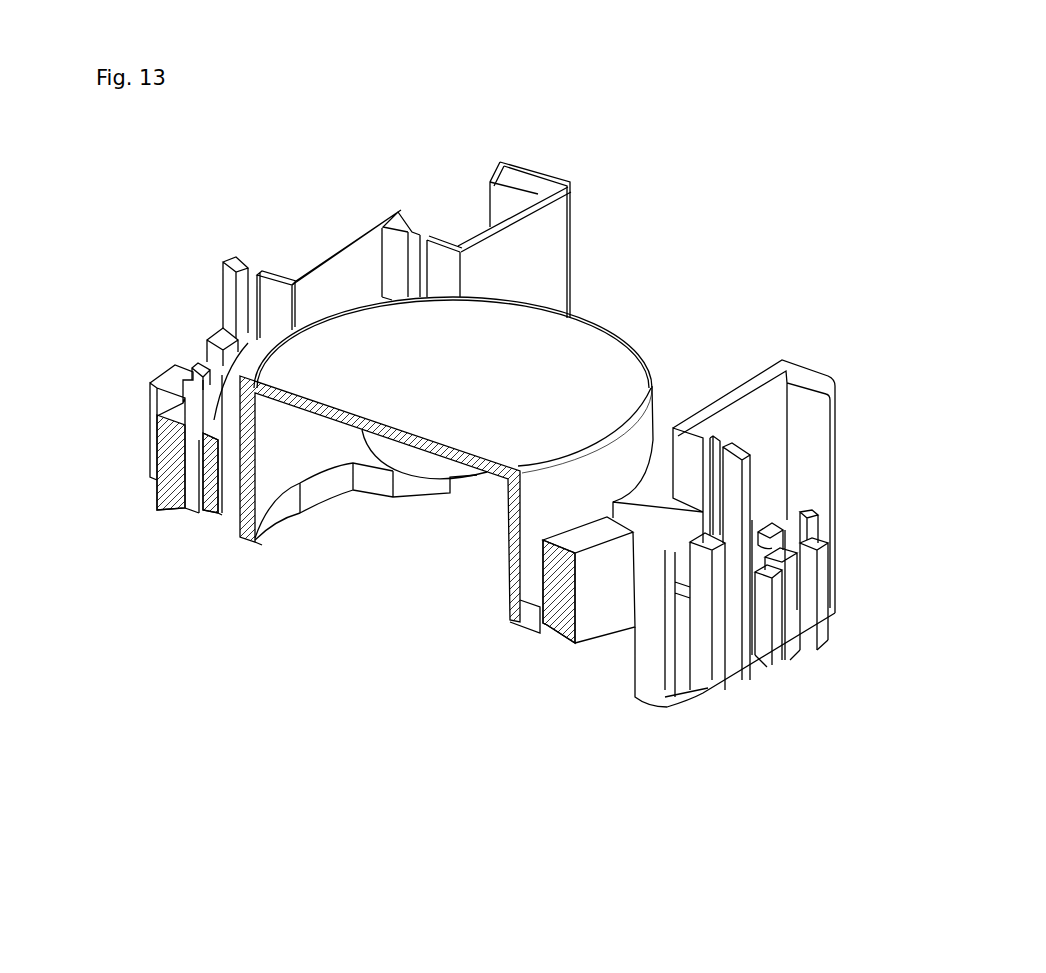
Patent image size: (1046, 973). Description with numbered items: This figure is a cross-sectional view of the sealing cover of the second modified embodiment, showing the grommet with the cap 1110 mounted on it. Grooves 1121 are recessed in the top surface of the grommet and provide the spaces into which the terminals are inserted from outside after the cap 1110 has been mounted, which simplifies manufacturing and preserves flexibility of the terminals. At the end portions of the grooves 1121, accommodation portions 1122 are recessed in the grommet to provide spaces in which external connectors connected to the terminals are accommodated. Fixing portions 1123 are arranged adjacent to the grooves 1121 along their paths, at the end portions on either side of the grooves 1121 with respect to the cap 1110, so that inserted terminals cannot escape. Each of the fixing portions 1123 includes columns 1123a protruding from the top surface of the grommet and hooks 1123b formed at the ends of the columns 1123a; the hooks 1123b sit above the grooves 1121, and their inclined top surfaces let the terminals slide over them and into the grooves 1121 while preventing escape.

The cap 1110 is at (580, 357).
The grooves 1121 is at (193, 493).
The accommodation portions 1122 is at (510, 203).
The fixing portions 1123 is at (475, 544).
The columns 1123a is at (717, 660).
The hooks 1123b is at (700, 566).